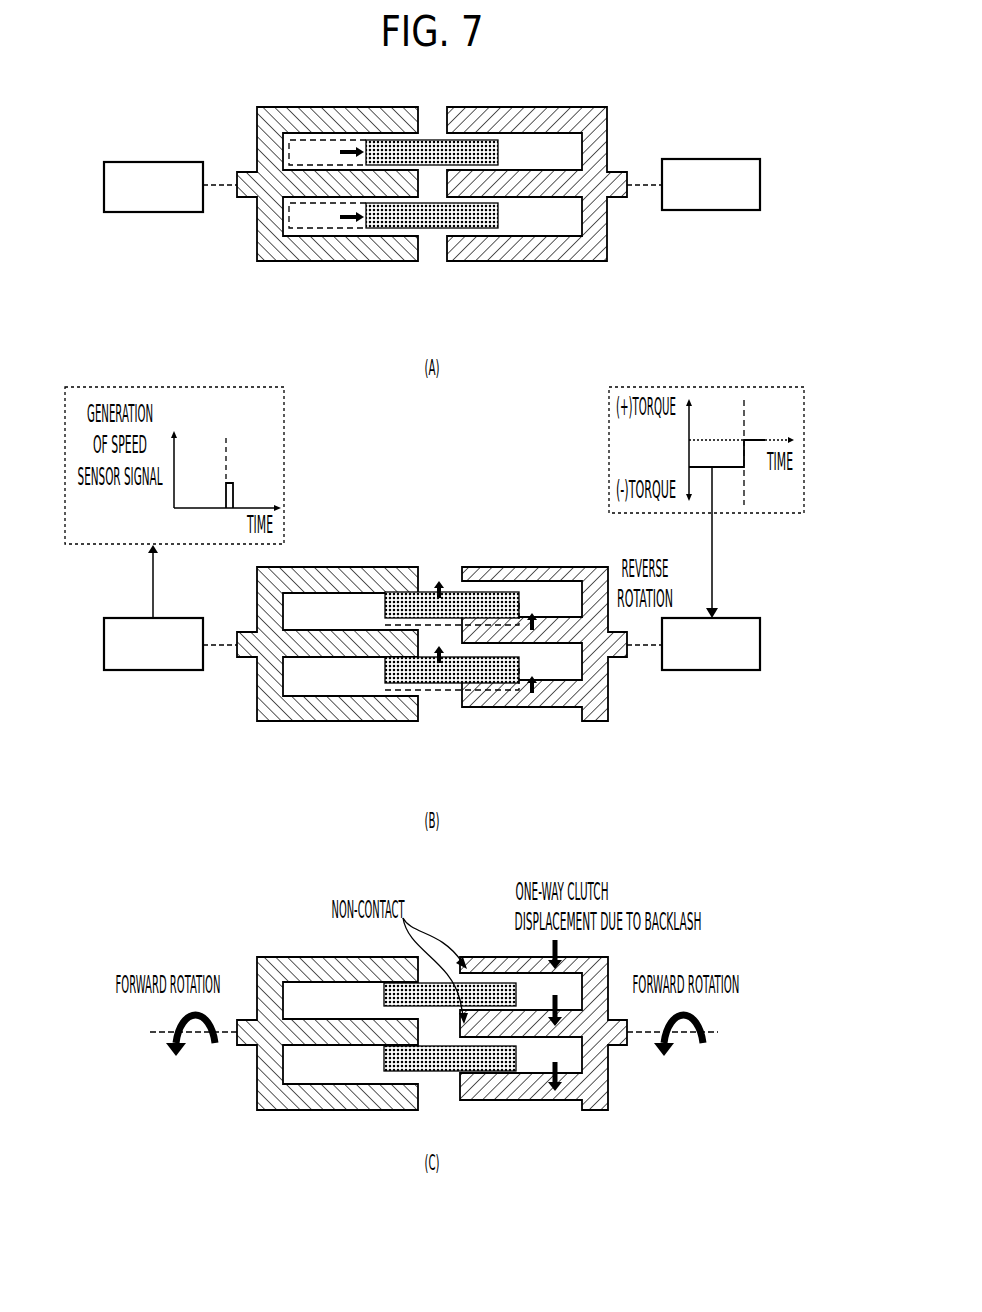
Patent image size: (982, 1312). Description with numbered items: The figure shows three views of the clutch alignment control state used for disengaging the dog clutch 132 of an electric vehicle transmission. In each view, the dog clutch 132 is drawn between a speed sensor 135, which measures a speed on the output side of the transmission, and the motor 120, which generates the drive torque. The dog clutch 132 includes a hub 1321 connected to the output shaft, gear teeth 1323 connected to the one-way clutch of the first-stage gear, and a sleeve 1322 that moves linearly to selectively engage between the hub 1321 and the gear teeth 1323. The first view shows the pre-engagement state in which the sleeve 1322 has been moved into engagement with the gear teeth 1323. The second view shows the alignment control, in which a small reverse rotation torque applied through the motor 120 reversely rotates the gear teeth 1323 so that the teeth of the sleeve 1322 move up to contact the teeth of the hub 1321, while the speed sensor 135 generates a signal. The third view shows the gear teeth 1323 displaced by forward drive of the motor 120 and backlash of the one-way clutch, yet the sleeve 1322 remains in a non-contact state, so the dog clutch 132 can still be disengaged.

The speed sensor 135 is at (153, 212).
The motor 120 is at (711, 210).
The dog clutch 132 is at (393, 533).
The hub 1321 is at (318, 240).
The sleeve 1322 is at (438, 218).
The gear teeth 1323 is at (548, 247).